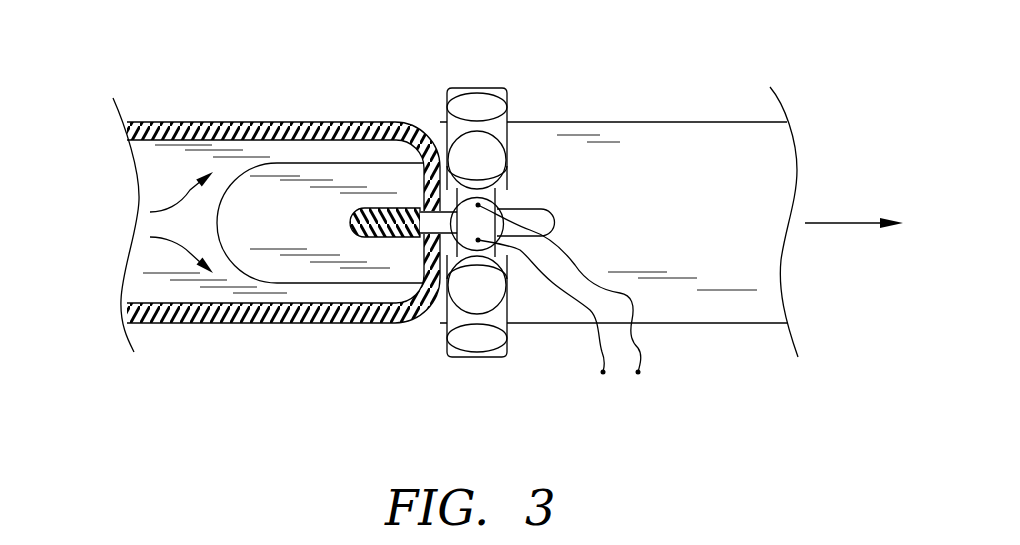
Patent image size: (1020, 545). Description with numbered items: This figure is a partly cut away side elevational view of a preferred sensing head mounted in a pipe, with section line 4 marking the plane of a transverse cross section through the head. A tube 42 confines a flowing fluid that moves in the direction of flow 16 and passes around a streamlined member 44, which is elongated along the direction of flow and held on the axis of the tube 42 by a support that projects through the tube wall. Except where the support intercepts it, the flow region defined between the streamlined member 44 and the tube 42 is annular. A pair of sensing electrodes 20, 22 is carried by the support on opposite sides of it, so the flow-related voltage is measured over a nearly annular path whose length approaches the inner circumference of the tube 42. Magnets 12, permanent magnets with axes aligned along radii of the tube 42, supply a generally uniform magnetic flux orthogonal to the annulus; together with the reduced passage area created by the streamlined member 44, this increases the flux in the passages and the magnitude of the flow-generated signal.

The section line 4- 4 is at (477, 62).
The magnet 12 is at (458, 338).
The direction of flow 16 is at (177, 208).
The electrode 20 is at (602, 353).
The electrode 22 is at (640, 345).
The tube 42 is at (261, 324).
The streamlined member 44 is at (305, 238).